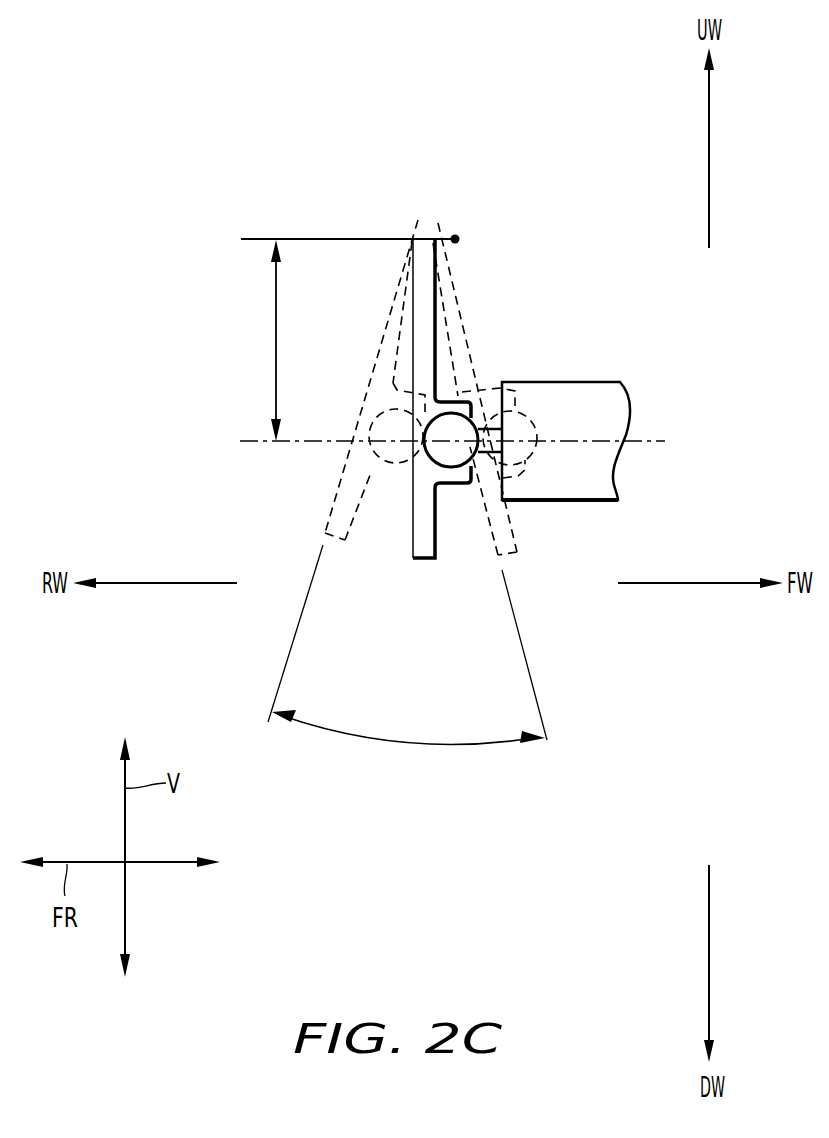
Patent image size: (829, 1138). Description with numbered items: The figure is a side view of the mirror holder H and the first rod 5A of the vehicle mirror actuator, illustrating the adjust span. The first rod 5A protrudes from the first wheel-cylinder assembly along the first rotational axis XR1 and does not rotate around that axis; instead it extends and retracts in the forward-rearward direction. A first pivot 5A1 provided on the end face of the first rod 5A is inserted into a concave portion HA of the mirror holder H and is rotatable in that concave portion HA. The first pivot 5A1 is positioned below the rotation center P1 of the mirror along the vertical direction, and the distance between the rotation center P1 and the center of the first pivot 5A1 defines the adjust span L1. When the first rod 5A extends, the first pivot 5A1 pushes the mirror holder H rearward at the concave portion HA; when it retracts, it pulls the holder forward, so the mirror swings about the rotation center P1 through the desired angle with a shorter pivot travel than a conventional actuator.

The mirror holder H is at (420, 536).
The concave portion HA is at (451, 460).
The first rod 5A is at (570, 390).
The first pivot 5A1 is at (458, 412).
The rotation center P1 is at (366, 240).
The adjust span L1 is at (261, 340).
The first rotational axis XR1 is at (453, 442).